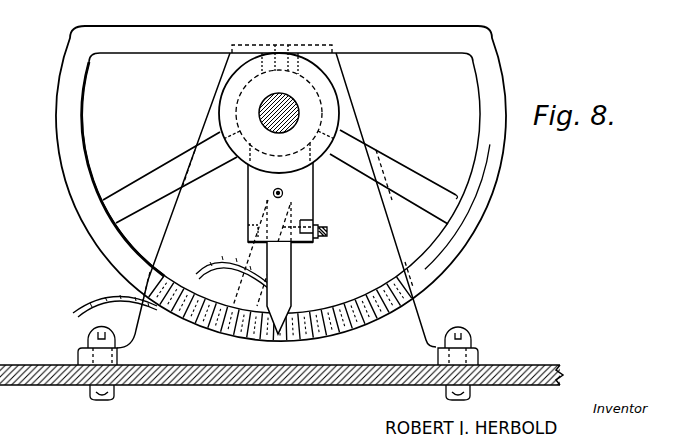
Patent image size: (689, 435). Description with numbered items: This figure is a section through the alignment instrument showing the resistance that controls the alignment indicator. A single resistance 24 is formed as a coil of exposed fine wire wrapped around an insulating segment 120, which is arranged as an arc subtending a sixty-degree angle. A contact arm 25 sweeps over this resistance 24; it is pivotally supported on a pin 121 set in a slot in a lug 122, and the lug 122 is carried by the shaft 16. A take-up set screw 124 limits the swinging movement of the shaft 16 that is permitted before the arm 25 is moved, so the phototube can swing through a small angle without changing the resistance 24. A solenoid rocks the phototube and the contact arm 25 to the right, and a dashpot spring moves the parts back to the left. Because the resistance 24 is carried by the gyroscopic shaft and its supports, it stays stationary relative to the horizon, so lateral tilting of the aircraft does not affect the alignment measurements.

The shaft 16 is at (297, 111).
The insulating segment 120 is at (452, 258).
The resistance 24 is at (318, 337).
The contact arm 25 is at (291, 286).
The pin 121 is at (273, 192).
The lug 122 is at (304, 192).
The take-up set screw 124 is at (323, 238).